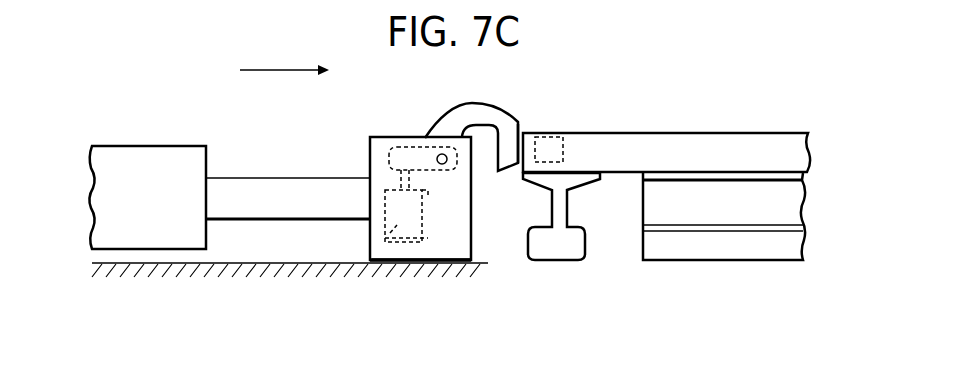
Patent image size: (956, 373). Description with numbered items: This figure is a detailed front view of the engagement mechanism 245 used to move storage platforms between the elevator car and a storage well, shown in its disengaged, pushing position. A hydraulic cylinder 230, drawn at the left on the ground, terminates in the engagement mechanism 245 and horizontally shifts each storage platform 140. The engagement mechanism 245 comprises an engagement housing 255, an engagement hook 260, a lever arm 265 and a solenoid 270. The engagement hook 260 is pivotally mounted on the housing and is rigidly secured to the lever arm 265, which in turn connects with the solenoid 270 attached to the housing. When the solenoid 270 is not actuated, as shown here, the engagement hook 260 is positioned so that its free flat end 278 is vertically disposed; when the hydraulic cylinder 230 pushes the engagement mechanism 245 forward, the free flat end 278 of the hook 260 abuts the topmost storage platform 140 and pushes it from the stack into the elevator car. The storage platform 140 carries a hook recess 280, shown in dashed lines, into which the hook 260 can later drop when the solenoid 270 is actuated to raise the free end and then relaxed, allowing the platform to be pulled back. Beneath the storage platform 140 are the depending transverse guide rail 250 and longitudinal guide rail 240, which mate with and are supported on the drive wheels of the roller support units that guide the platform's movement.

The storage platform 140 is at (683, 148).
The hydraulic cylinder 230 is at (154, 232).
The longitudinal guide rail 240 is at (720, 250).
The engagement mechanism 245 is at (375, 122).
The transverse guide rail 250 is at (563, 250).
The engagement housing 255 is at (448, 242).
The engagement hook 260 is at (484, 112).
The lever arm 265 is at (405, 140).
The solenoid 270 is at (385, 264).
The free flat end 278 is at (513, 147).
The hook recess 280 is at (562, 133).